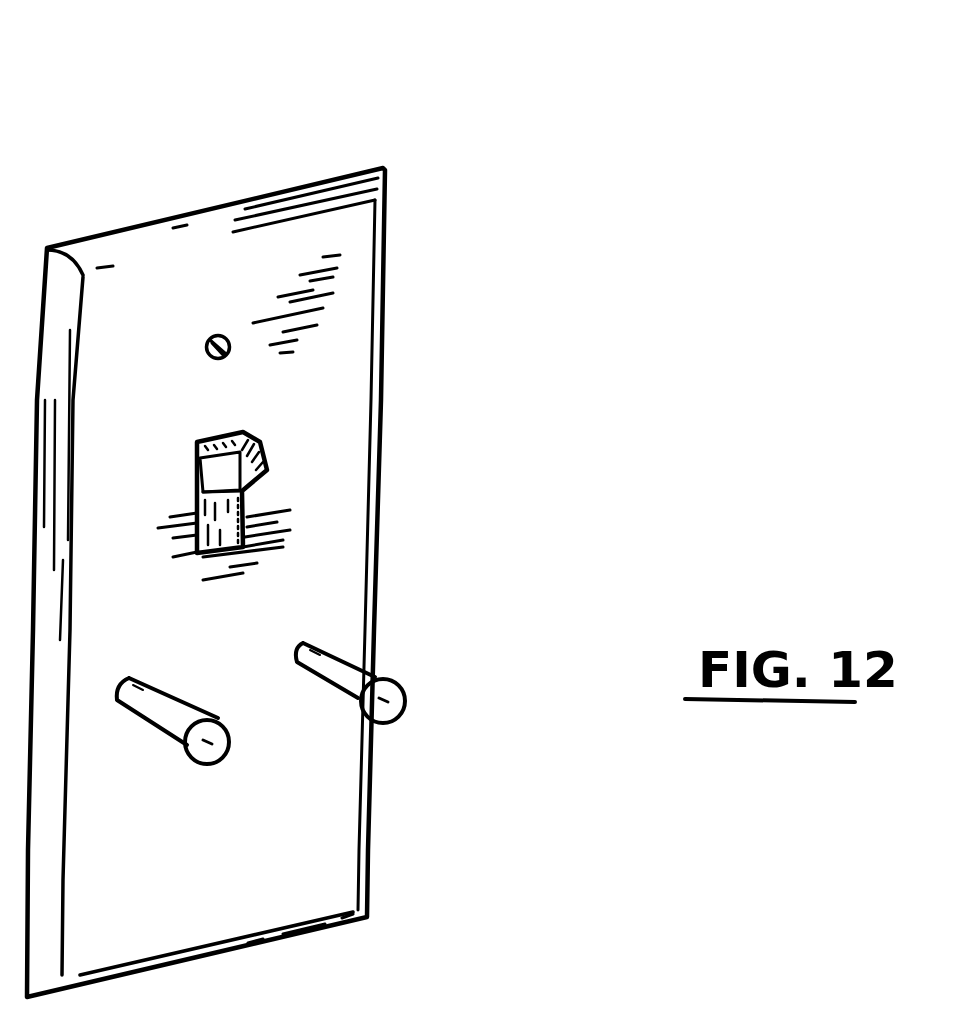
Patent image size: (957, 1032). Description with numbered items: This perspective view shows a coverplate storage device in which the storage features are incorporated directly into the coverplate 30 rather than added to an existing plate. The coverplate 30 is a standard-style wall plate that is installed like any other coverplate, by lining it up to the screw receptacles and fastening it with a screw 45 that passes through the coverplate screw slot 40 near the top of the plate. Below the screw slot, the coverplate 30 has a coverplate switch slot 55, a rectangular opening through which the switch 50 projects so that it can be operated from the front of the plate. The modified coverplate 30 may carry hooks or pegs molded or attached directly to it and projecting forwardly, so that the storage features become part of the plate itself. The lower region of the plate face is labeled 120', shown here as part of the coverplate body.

The coverplate 30 is at (360, 300).
The coverplate screw slot 40 is at (228, 338).
The screw 45 is at (207, 350).
The switch 50 is at (263, 445).
The coverplate switch slot 55 is at (243, 497).
The plate body 120' is at (341, 587).